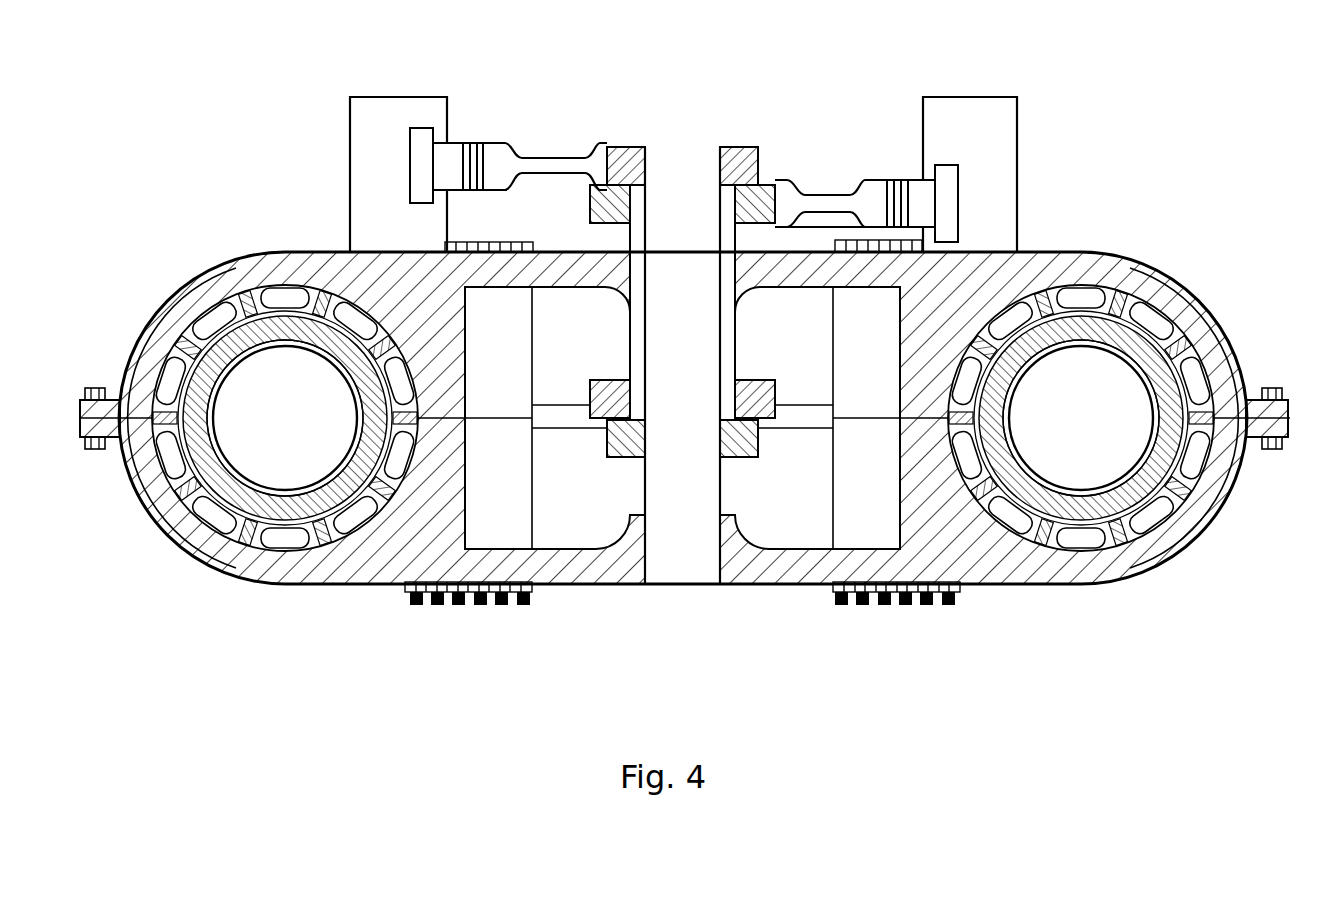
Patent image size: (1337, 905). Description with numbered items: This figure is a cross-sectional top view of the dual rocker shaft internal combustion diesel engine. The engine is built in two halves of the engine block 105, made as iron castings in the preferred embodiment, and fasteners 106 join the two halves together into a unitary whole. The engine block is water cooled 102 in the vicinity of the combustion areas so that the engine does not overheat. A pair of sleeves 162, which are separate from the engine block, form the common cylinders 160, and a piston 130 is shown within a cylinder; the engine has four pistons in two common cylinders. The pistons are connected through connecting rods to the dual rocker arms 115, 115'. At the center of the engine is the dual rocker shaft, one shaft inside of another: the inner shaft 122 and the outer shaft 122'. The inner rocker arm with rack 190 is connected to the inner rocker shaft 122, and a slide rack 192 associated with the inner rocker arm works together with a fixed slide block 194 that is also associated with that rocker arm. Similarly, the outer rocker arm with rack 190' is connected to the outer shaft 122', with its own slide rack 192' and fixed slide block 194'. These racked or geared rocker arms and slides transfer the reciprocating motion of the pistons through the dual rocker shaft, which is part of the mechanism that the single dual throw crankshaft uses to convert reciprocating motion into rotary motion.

The water cooling 102 is at (1173, 298).
The engine block 105 is at (1213, 500).
The fasteners 106 is at (905, 607).
The dual rocker arm 115 is at (704, 371).
The dual rocker arm 115' is at (649, 463).
The inner shaft of dual rocker shaft 122 is at (700, 398).
The outer shaft of dual rocker shaft 122' is at (647, 192).
The piston 130 is at (311, 430).
The cylinder 160 is at (1109, 430).
The sleeve 162 is at (1085, 490).
The inner rocker arm with rack 190 is at (831, 181).
The outer rocker arm with rack 190' is at (567, 138).
The slide rack 192 is at (491, 138).
The slide rack 192' is at (928, 181).
The fixed slide block 194 is at (336, 174).
The fixed slide block 194' is at (984, 144).